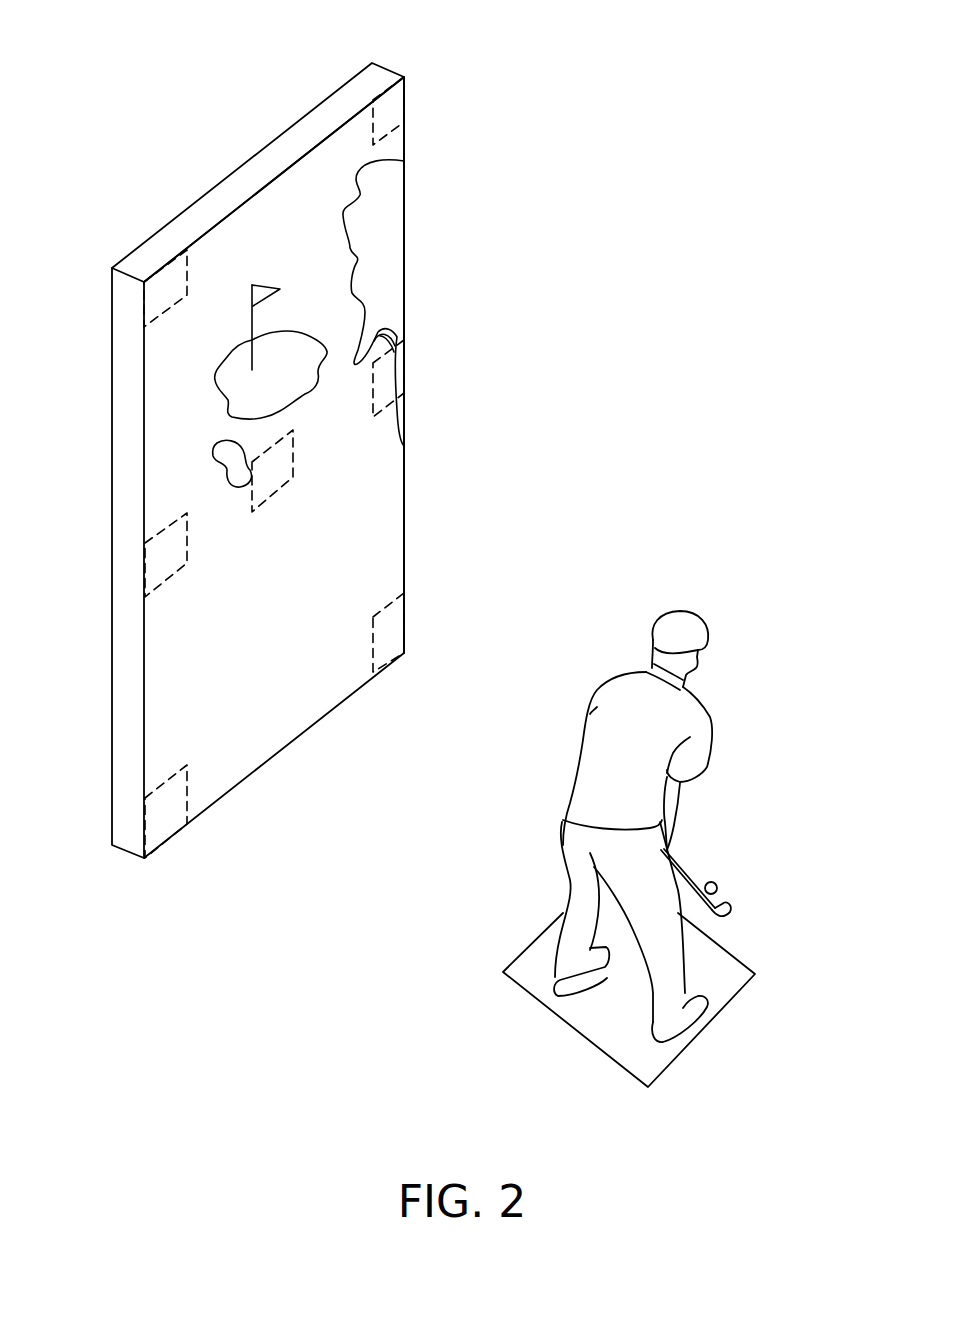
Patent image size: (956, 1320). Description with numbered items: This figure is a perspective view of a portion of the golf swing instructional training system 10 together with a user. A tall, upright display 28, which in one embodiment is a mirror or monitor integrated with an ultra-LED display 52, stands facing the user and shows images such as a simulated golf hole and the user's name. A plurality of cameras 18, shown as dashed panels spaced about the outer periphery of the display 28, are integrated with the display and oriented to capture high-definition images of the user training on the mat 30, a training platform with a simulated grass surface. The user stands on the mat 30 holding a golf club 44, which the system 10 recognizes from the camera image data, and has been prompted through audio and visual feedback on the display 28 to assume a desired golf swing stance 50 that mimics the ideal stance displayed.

The golf swing instructional training system 10 is at (620, 142).
The display 28 is at (323, 101).
The cameras 18 is at (403, 122).
The ultra-LED display 52 is at (170, 355).
The golf swing stance 50 is at (728, 616).
The golf club 44 is at (683, 872).
The mat 30 is at (747, 964).